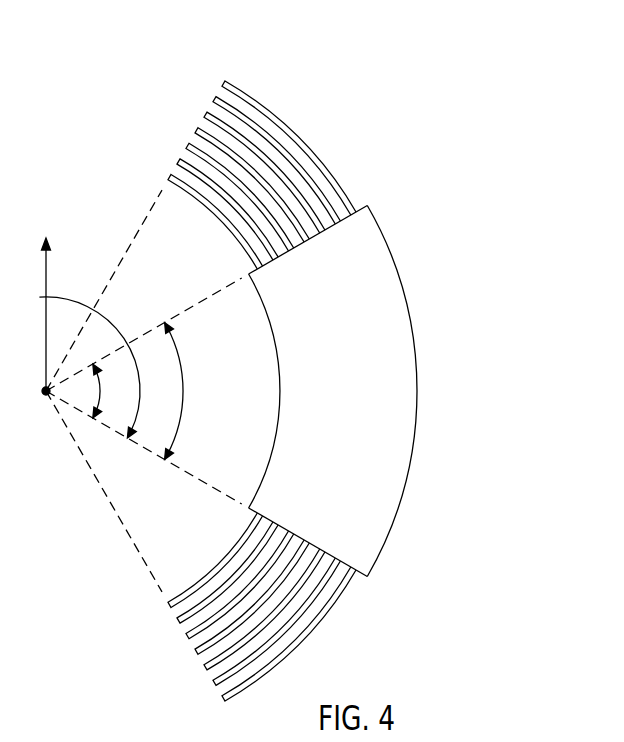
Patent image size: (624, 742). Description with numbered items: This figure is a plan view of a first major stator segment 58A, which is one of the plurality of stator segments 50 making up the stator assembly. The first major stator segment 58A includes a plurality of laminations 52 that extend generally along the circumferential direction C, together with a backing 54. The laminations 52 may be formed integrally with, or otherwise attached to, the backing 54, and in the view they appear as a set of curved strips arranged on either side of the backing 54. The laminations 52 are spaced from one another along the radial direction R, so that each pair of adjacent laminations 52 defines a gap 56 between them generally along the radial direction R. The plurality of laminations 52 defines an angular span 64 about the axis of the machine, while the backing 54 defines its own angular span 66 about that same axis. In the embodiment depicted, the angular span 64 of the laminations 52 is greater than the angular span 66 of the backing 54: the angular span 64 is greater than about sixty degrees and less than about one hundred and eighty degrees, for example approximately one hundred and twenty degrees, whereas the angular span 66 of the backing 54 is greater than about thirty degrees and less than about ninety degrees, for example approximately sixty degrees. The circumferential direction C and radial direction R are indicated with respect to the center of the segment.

The stator segments 50 is at (385, 102).
The first major stator segment 58A is at (314, 361).
The laminations 52 is at (278, 102).
The backing 54 is at (400, 406).
The gap 56 is at (254, 113).
The angular span of the plurality of laminations 64 is at (88, 428).
The angular span of the backing 66 is at (179, 399).
The circumferential direction C is at (37, 298).
The radial direction R is at (50, 271).